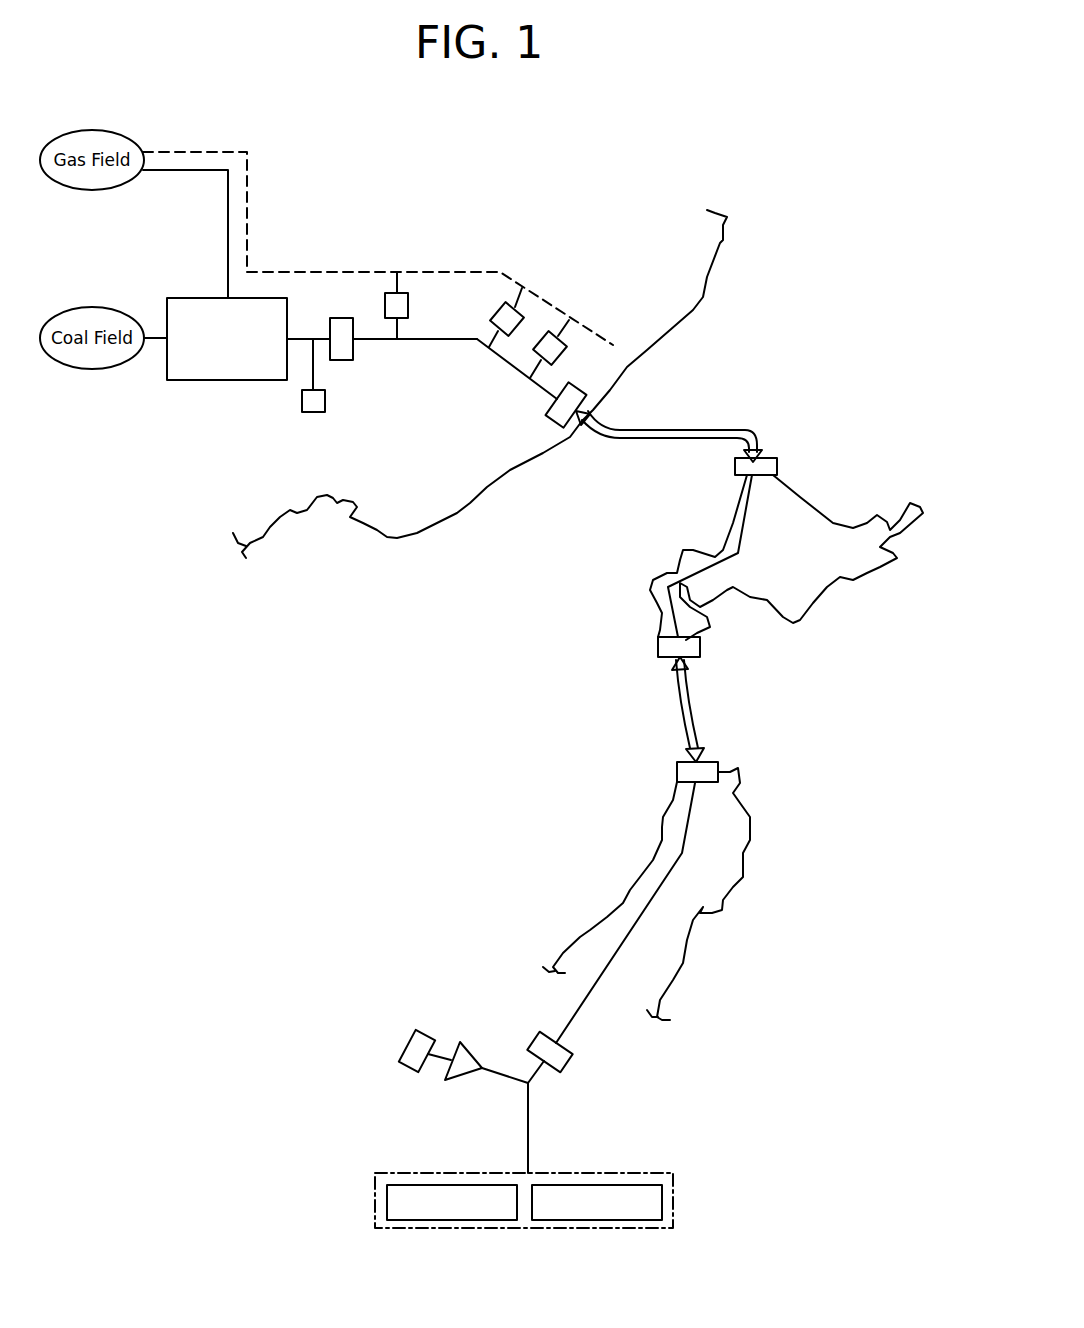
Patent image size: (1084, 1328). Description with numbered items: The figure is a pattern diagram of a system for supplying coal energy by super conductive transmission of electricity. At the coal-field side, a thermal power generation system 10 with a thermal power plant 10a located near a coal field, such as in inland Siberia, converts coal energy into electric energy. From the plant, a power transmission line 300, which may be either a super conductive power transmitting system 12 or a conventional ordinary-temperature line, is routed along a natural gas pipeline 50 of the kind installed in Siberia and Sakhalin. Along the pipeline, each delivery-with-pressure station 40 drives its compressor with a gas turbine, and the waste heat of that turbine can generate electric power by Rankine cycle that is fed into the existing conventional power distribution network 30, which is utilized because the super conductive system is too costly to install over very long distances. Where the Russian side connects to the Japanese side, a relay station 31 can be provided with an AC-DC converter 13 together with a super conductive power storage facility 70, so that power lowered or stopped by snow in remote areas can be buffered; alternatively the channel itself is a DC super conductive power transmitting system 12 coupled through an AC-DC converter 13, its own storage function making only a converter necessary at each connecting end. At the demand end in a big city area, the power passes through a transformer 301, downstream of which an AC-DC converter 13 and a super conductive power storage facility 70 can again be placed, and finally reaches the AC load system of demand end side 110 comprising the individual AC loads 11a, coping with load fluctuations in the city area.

The thermal power generation system 10 is at (151, 372).
The thermal power plant 10a is at (232, 382).
The AC load 11a is at (420, 1183).
The super conductive power transmitting system 12 is at (680, 428).
The AC-DC converter 13 is at (460, 1042).
The power distribution network 30 is at (446, 342).
The relay station 31 is at (342, 320).
The delivery-with-pressure station 40 is at (406, 305).
The natural gas pipeline 50 is at (228, 230).
The super conductive power storage facility 70 is at (325, 402).
The AC load system of demand end side 110 is at (683, 1160).
The power transmission line 300 is at (298, 342).
The transformer 301 is at (573, 1062).